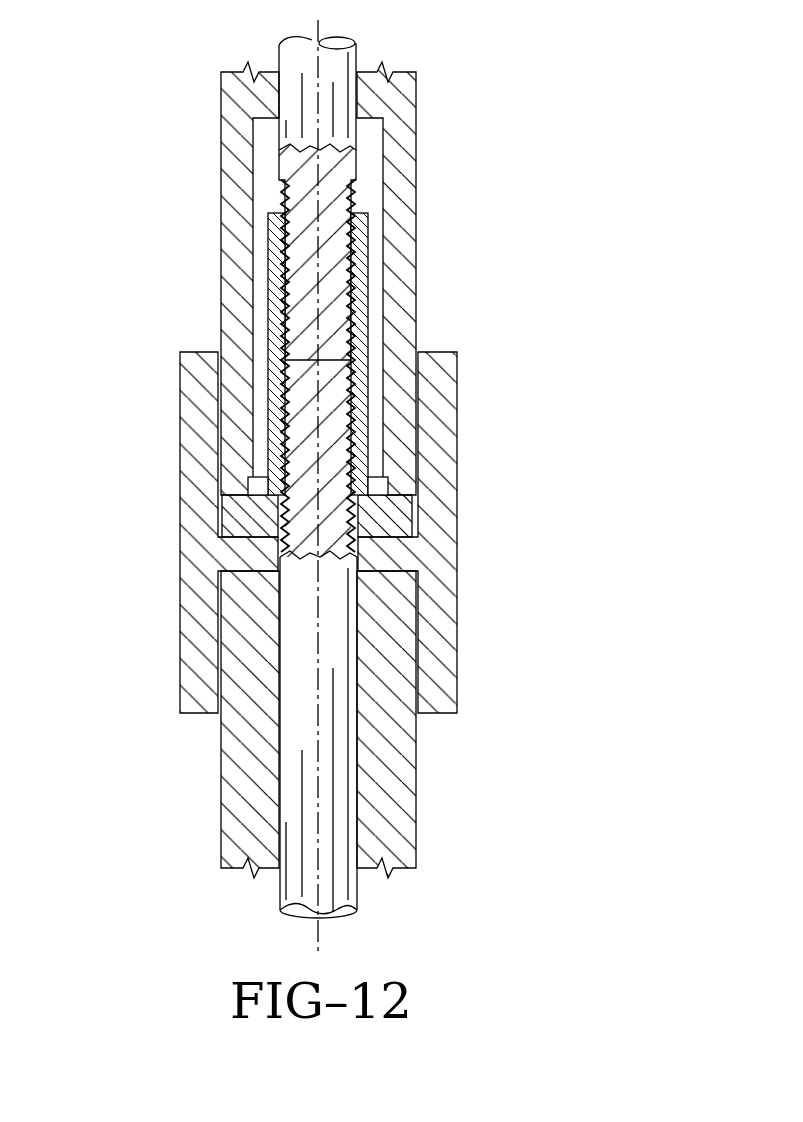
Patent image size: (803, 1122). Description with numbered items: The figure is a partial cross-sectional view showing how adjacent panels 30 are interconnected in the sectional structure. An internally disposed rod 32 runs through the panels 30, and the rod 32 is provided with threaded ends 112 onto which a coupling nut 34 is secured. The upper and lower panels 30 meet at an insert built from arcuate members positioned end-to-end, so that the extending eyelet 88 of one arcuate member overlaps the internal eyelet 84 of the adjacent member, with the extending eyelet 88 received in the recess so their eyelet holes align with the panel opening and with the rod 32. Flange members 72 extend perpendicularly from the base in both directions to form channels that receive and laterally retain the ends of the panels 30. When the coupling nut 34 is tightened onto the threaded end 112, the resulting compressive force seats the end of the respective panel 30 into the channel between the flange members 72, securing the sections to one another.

The panel 30 is at (421, 117).
The rod 32 is at (353, 59).
The coupling nut 34 is at (362, 276).
The flange member 72 is at (192, 658).
The internal eyelet 84 is at (418, 558).
The extending eyelet 88 is at (405, 504).
The threaded end 112 is at (352, 192).